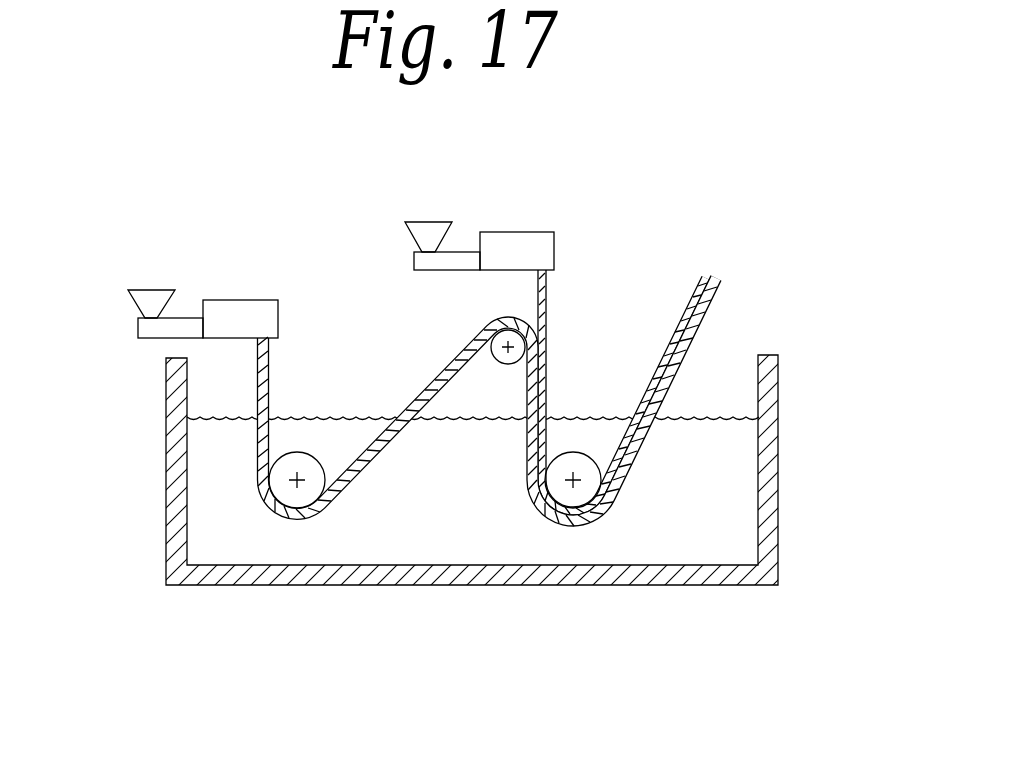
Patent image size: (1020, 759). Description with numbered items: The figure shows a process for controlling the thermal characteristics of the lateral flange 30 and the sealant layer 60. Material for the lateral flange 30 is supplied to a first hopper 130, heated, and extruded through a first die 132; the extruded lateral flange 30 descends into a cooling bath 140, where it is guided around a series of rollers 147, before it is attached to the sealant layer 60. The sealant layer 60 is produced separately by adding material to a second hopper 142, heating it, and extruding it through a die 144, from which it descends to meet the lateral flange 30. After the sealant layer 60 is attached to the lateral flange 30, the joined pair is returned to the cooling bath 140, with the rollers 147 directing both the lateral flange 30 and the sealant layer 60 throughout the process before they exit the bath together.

The first hopper 130 is at (160, 290).
The first die 132 is at (255, 300).
The lateral flange 30 is at (274, 355).
The rollers 147 is at (300, 465).
The cooling bath 140 is at (210, 466).
The second hopper 142 is at (432, 222).
The die 144 is at (522, 232).
The sealant layer 60 is at (550, 303).